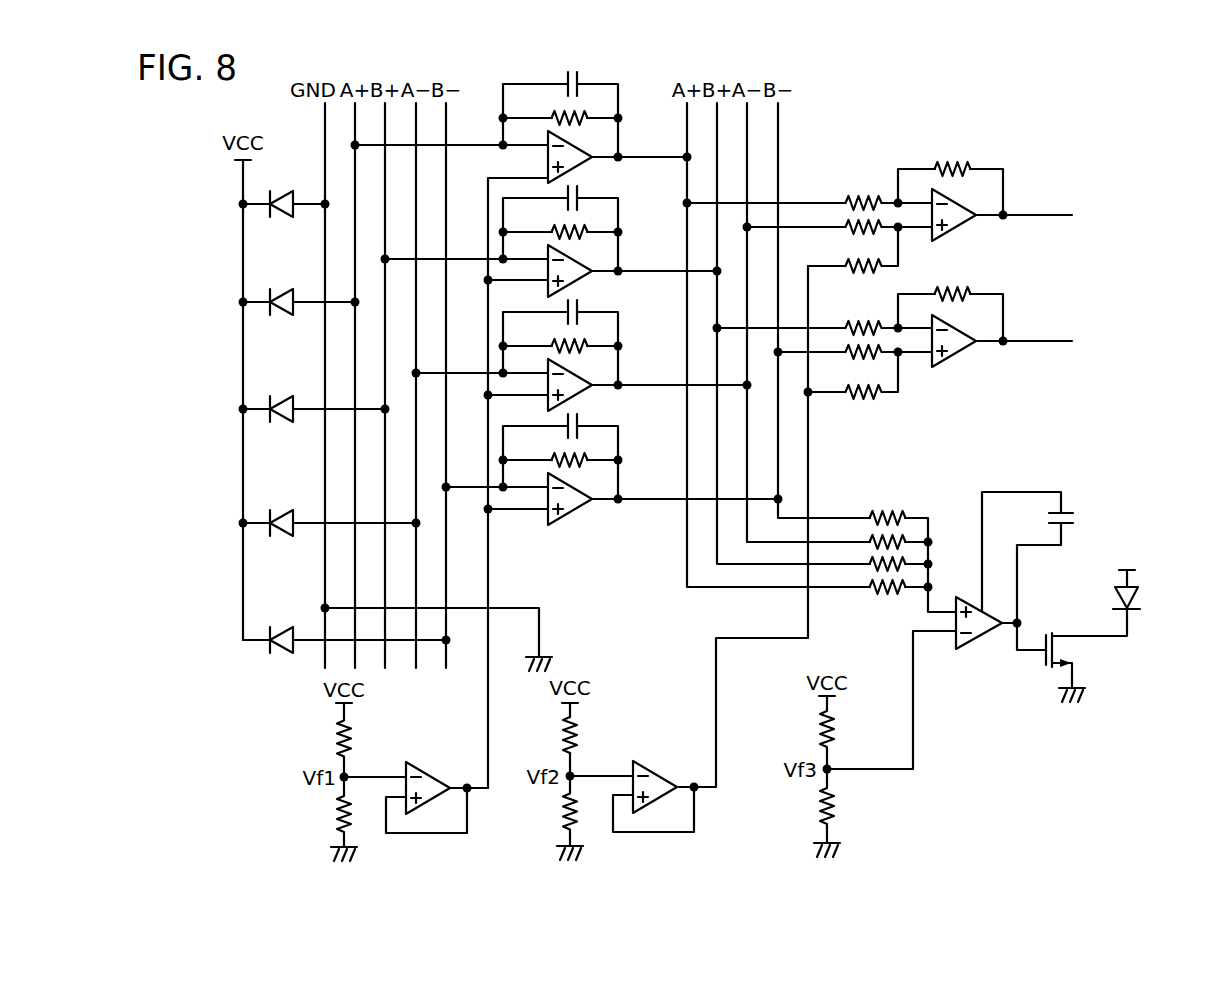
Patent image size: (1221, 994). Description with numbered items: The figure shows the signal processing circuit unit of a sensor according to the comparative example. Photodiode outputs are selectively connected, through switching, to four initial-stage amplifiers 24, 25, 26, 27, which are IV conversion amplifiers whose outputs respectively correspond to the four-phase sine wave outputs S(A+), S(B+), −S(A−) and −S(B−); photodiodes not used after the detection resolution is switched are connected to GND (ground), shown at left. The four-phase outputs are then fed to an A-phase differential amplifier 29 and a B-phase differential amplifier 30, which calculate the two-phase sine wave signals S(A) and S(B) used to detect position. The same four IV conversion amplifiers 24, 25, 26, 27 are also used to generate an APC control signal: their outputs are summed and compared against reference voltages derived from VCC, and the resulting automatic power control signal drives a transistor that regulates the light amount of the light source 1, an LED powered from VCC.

The light source 1 is at (1138, 597).
The initial-stage amplifier 24 is at (578, 169).
The initial-stage amplifier 25 is at (578, 283).
The initial-stage amplifier 26 is at (578, 397).
The initial-stage amplifier 27 is at (578, 511).
The A-phase differential amplifier 29 is at (962, 226).
The B-phase differential amplifier 30 is at (962, 352).